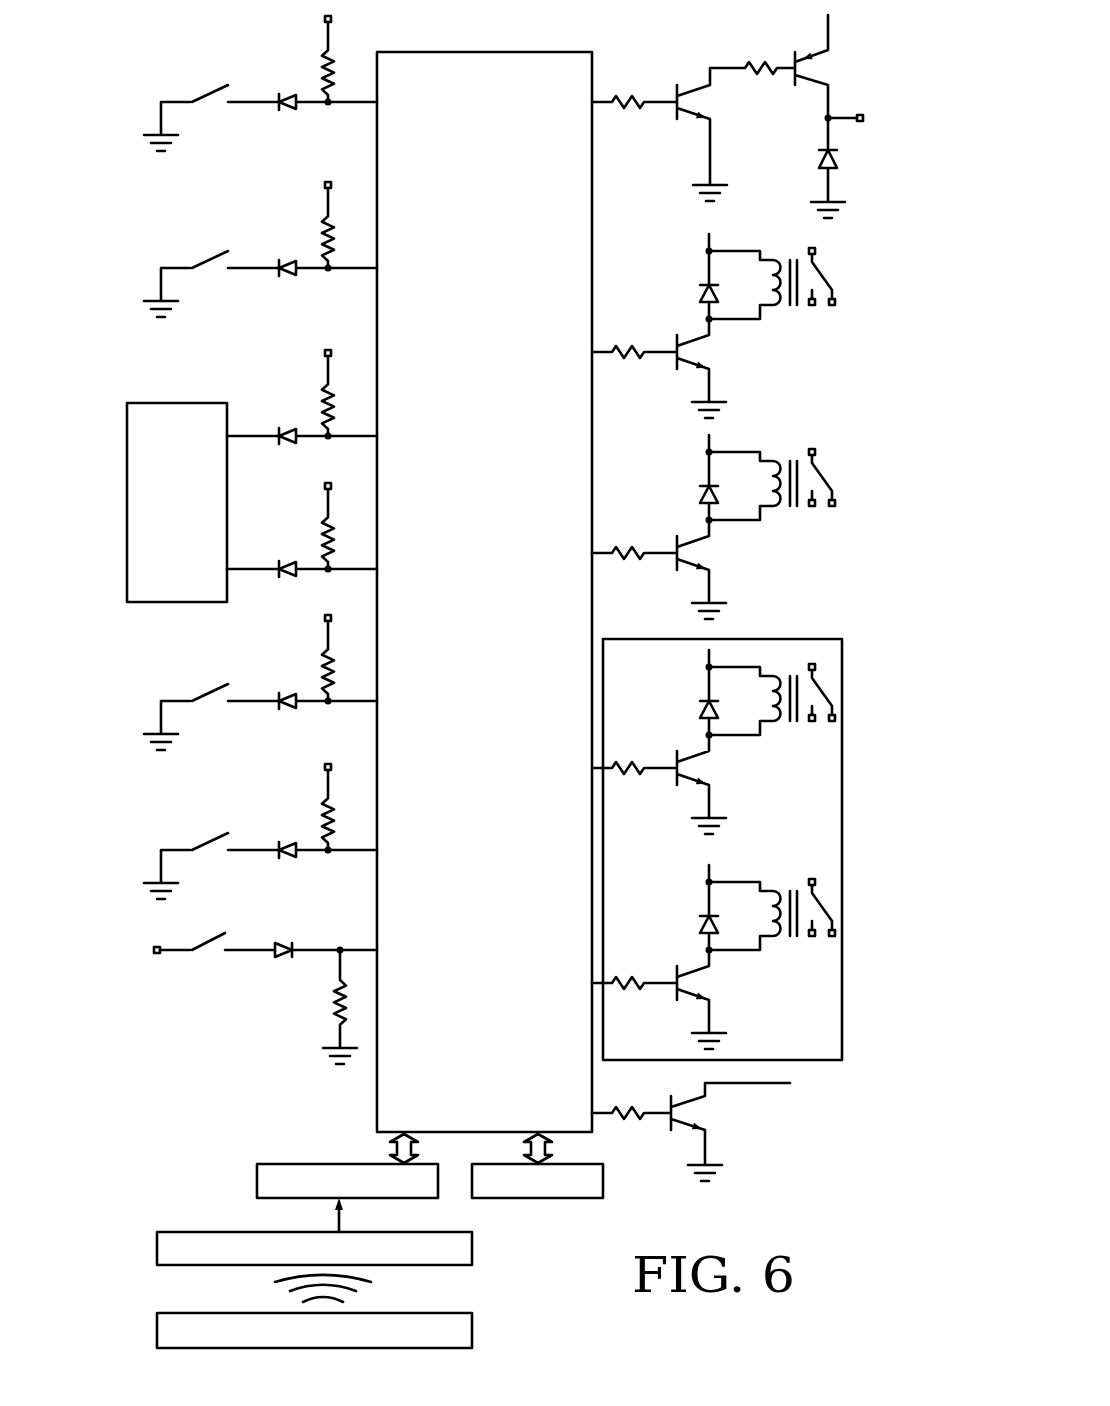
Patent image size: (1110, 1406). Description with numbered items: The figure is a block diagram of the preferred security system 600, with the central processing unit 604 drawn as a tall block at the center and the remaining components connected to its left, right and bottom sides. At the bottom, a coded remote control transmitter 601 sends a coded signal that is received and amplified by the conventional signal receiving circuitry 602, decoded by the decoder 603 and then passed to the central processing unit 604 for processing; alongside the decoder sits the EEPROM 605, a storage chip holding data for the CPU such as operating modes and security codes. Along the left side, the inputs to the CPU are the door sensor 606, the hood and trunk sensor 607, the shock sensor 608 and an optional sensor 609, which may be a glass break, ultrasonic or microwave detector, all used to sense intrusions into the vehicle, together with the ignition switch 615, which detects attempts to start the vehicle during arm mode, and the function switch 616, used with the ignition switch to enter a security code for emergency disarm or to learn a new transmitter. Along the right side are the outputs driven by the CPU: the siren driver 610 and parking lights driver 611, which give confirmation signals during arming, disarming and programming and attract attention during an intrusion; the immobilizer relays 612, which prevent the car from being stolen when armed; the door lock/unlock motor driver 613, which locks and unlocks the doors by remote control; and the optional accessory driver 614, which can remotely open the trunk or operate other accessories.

The security system 600 is at (484, 576).
The remote control transmitter 601 is at (286, 1311).
The signal receiving circuitry 602 is at (286, 1231).
The decoder 603 is at (317, 1166).
The central processing unit 604 is at (484, 592).
The EEPROM 605 is at (559, 1166).
The door sensor 606 is at (237, 79).
The hood and trunk sensor 607 is at (232, 245).
The shock sensor 608 is at (237, 476).
The optional sensor 609 is at (234, 682).
The siren driver 610 is at (746, 116).
The parking lights driver 611 is at (756, 324).
The immobilizer relays 612 is at (728, 527).
The door lock/unlock motor driver 613 is at (756, 849).
The optional accessory driver 614 is at (732, 1145).
The ignition switch 615 is at (234, 998).
The function switch 616 is at (232, 831).